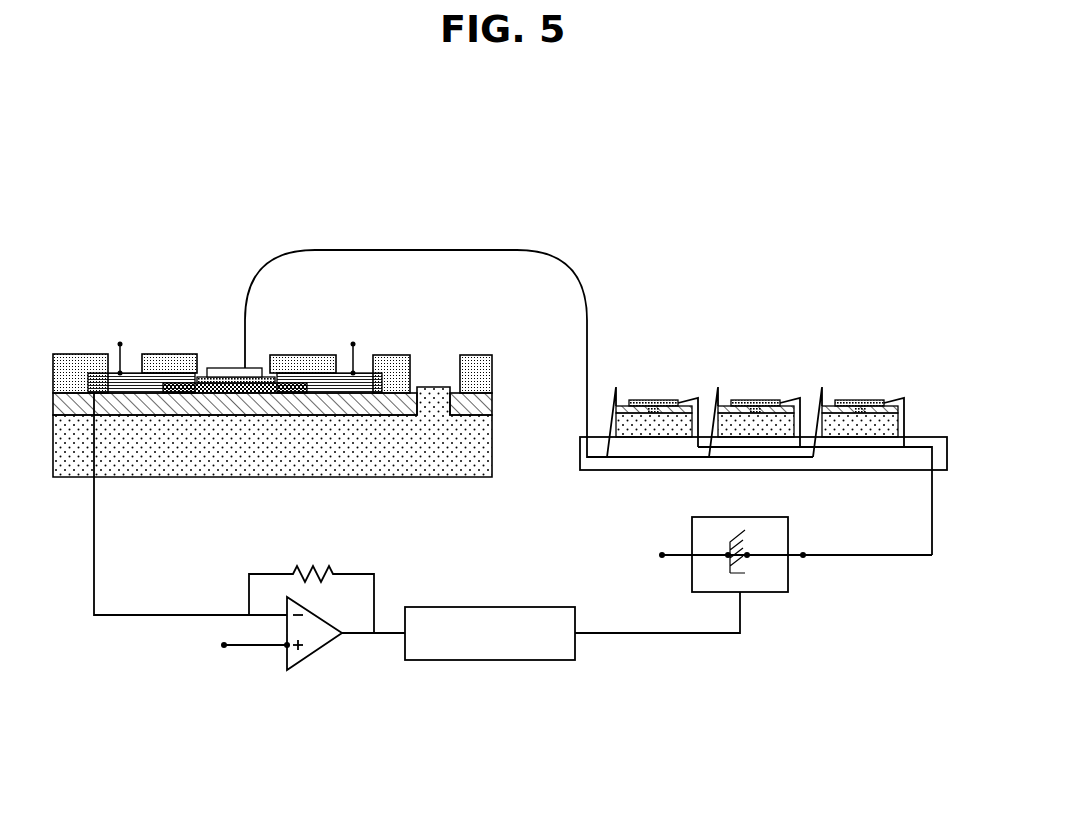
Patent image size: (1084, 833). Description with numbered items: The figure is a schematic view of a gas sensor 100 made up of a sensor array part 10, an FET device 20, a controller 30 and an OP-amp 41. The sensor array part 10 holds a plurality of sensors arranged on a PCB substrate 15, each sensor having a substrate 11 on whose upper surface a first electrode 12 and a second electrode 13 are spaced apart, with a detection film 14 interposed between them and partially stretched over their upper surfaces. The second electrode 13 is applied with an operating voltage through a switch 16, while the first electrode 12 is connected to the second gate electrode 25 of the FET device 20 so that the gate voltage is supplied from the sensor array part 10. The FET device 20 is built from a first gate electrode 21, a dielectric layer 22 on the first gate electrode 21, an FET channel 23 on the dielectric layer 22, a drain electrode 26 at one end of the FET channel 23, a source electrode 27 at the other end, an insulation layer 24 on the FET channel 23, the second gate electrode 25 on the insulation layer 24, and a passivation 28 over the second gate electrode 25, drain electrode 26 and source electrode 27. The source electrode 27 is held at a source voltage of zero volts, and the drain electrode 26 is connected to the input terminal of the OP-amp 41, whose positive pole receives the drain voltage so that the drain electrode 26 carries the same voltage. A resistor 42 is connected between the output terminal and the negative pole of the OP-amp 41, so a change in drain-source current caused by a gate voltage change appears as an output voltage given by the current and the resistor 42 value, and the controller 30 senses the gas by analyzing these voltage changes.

The gas sensor 100 is at (174, 154).
The FET device 20 is at (110, 280).
The first gate electrode 21 is at (427, 466).
The dielectric layer 22 is at (150, 413).
The FET channel 23 is at (250, 381).
The insulation layer 24 is at (249, 383).
The second gate electrode 25 is at (221, 368).
The drain electrode 26 is at (134, 377).
The source electrode 27 is at (369, 376).
The passivation 28 is at (75, 358).
The sensor array part 10 is at (856, 333).
The substrate 11 is at (893, 422).
The first electrode 12 is at (829, 406).
The second electrode 13 is at (888, 407).
The detection film 14 is at (860, 400).
The PCB substrate 15 is at (875, 470).
The switch 16 is at (780, 588).
The controller 30 is at (563, 660).
The OP-amp 41 is at (315, 651).
The resistor 42 is at (325, 567).